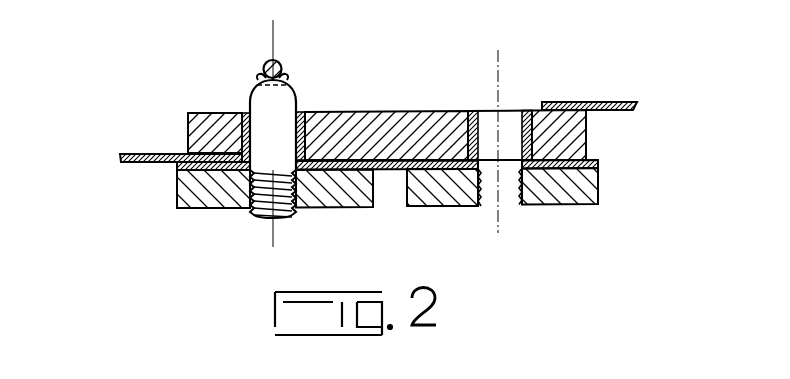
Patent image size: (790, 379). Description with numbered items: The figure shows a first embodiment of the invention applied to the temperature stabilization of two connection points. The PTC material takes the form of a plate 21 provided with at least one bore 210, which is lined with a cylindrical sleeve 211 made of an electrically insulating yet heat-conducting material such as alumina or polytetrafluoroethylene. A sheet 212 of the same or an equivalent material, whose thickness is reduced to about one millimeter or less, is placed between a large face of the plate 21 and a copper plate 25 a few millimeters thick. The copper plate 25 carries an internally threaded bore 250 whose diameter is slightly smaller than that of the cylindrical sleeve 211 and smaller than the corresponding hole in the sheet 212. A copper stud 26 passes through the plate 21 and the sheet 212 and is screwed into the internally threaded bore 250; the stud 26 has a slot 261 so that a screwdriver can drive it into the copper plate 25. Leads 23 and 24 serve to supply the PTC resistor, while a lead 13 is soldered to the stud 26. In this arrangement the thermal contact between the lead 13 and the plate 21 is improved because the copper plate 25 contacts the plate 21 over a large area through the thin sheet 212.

The lead 13 is at (277, 62).
The plate 21 is at (582, 135).
The lead 23 is at (612, 102).
The lead 24 is at (121, 162).
The copper plate 25 is at (431, 197).
The copper stud 26 is at (282, 106).
The bore 210 is at (483, 130).
The cylindrical sleeve 211 is at (530, 118).
The sheet 212 is at (598, 164).
The internally threaded bore 250 is at (517, 205).
The slot 261 is at (256, 83).